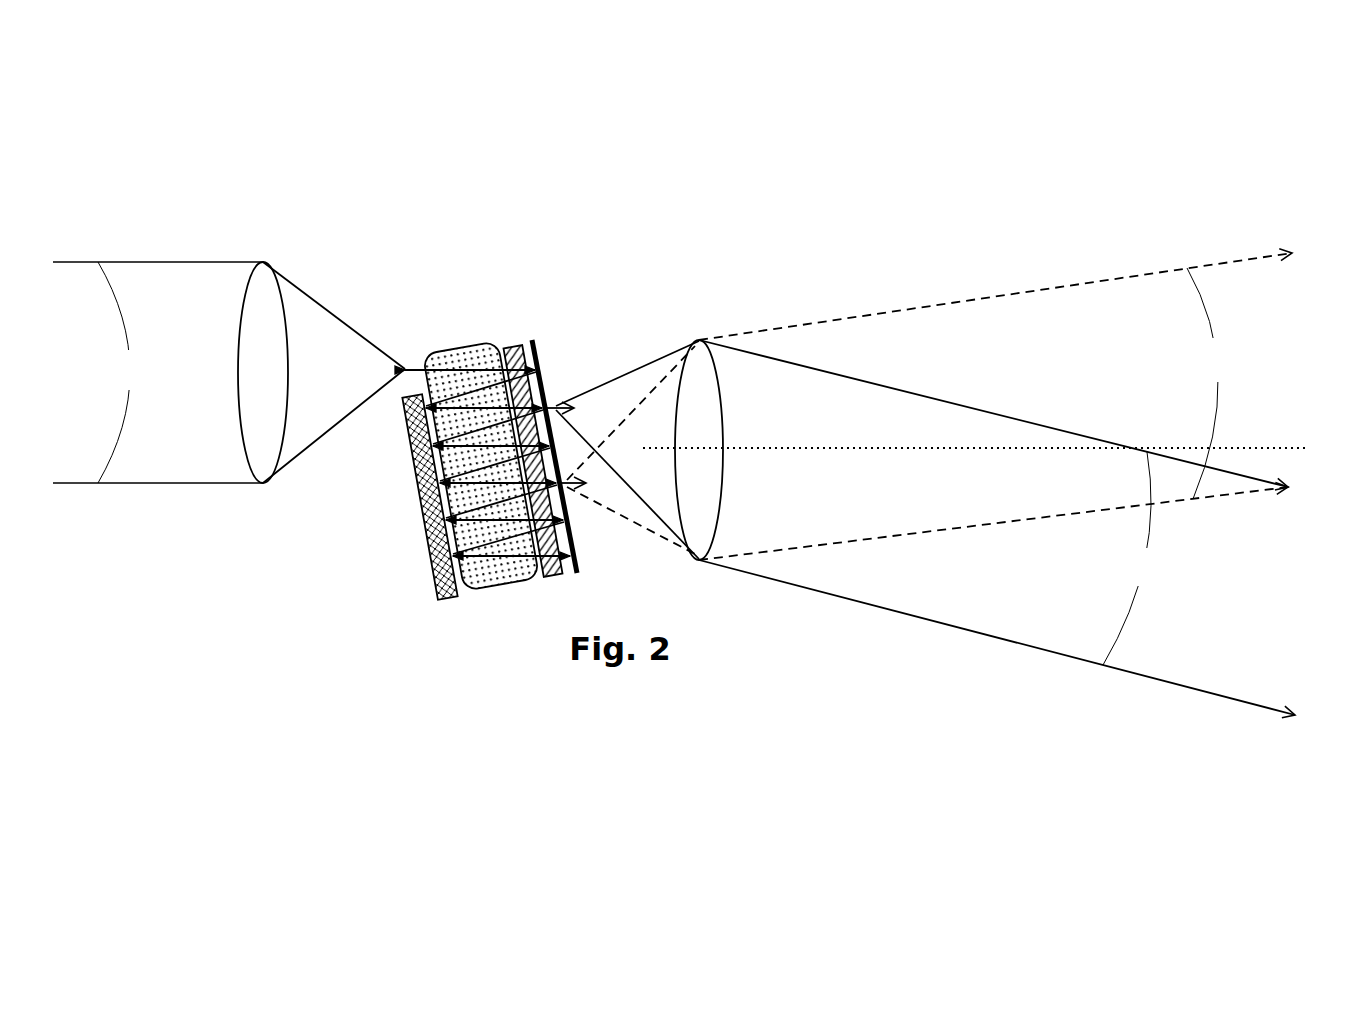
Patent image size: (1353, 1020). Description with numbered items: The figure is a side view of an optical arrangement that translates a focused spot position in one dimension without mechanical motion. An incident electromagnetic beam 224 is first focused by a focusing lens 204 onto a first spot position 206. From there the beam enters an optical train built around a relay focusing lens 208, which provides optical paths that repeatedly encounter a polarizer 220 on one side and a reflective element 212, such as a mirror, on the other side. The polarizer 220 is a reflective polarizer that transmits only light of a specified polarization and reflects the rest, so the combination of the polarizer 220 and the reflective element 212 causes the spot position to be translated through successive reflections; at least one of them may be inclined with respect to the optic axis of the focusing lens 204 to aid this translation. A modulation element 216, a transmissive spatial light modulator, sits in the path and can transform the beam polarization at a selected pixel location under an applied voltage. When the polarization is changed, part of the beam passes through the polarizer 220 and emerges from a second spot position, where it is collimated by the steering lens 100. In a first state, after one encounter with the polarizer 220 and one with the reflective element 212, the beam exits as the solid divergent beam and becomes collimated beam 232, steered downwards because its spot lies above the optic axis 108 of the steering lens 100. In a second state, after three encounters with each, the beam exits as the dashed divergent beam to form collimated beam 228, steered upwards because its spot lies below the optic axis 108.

The steering lens 100 is at (724, 490).
The optic axis 108 is at (1283, 443).
The focusing lens 204 is at (262, 262).
The first spot position 206 is at (400, 369).
The relay focusing lens 208 is at (470, 346).
The reflective element 212 is at (450, 604).
The modulation element 216 is at (551, 576).
The polarizer 220 is at (548, 380).
The incident electromagnetic beam 224 is at (158, 372).
The collimated beam 228 is at (995, 406).
The collimated beam 232 is at (997, 527).